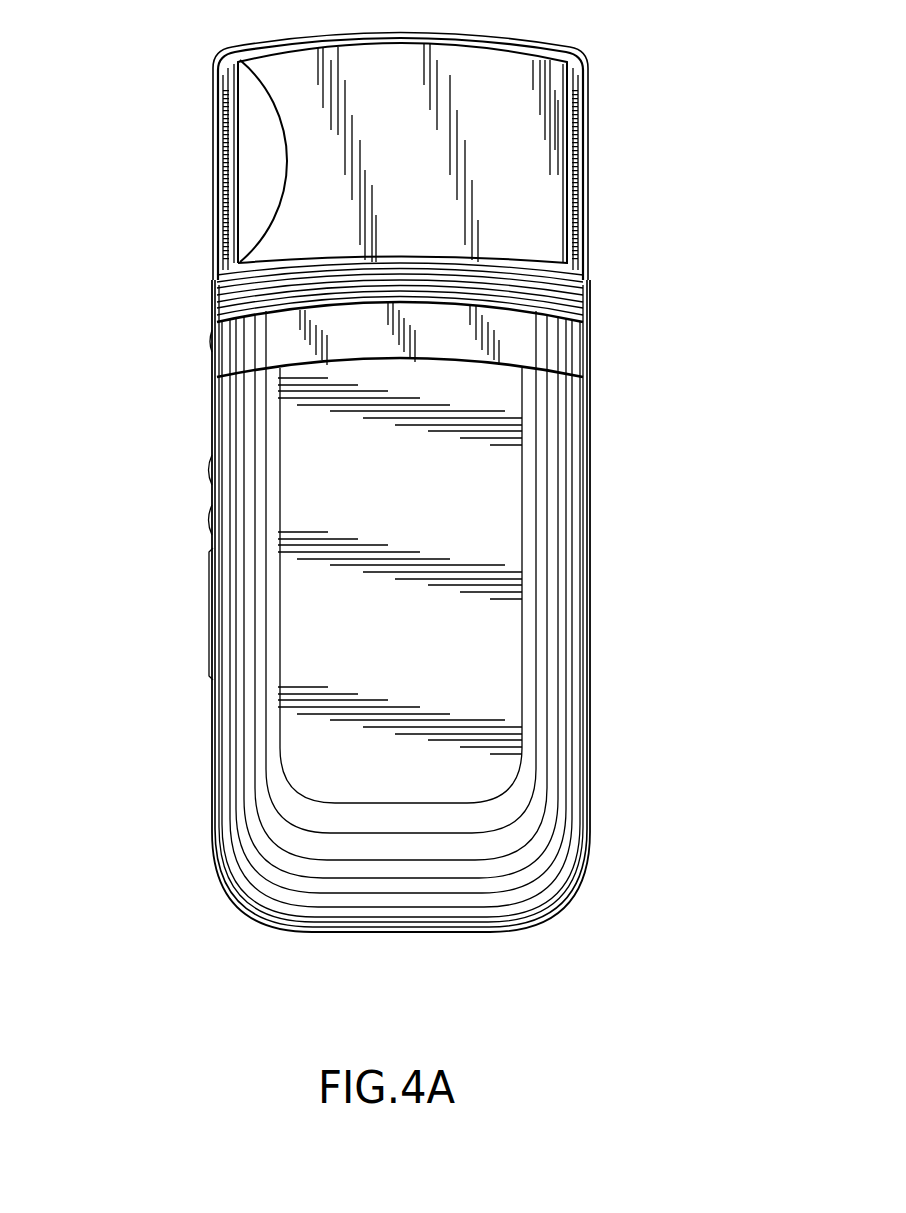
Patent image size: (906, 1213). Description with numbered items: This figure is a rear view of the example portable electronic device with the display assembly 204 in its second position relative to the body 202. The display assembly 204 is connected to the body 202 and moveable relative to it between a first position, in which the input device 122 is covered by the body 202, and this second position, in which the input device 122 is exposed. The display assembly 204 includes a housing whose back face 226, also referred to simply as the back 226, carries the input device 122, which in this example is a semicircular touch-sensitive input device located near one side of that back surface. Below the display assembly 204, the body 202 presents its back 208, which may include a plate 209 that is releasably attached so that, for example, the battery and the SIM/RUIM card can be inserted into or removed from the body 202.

The input device 122 is at (250, 137).
The body 202 is at (217, 773).
The display assembly 204 is at (573, 52).
The back 208 is at (287, 161).
The plate 209 is at (550, 643).
The back face 226 is at (533, 181).